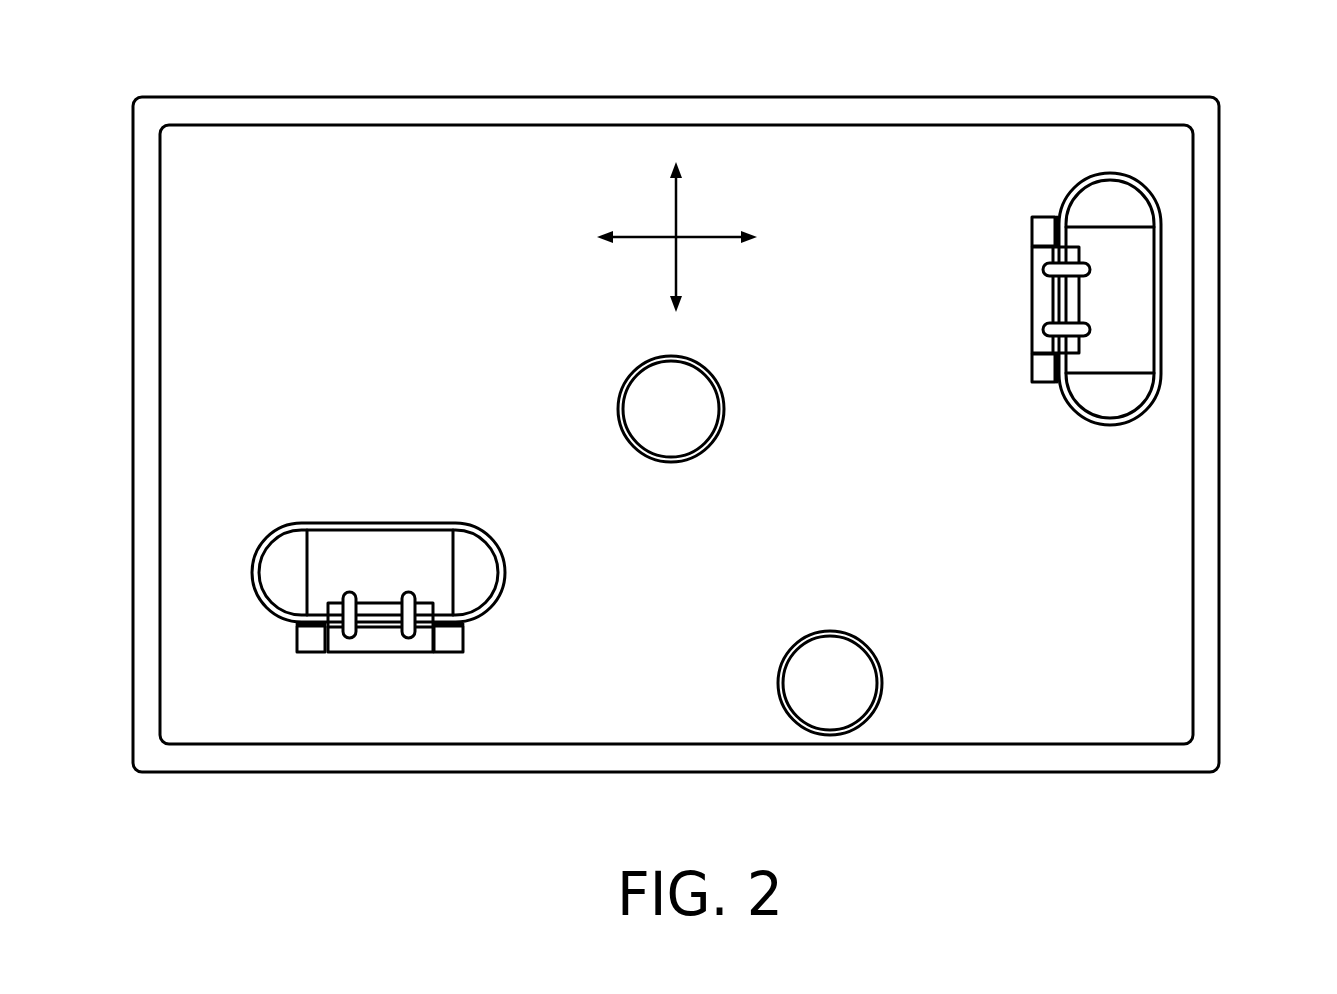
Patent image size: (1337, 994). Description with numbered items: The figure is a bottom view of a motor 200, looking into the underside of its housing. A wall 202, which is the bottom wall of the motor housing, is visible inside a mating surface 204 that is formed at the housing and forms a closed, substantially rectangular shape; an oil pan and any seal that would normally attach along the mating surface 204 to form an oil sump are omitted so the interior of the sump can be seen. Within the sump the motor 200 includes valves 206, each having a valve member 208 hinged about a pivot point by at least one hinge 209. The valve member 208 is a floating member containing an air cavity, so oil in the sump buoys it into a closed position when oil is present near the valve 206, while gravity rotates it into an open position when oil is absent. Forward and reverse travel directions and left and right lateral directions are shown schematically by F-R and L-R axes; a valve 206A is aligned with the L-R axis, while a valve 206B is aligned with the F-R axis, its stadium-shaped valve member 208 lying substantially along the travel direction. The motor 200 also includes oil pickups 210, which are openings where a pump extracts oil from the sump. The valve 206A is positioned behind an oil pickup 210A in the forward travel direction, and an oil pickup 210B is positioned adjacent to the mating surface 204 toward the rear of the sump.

The motor 200 is at (1170, 85).
The wall 202 is at (362, 256).
The mating surface 204 is at (645, 113).
The valve 206 is at (1064, 656).
The valve 206A is at (408, 579).
The valve 206B is at (1134, 395).
The valve member 208 is at (398, 572).
The hinge 209 is at (350, 640).
The oil pickup 210 is at (846, 438).
The oil pickup 210A is at (712, 375).
The oil pickup 210B is at (862, 638).